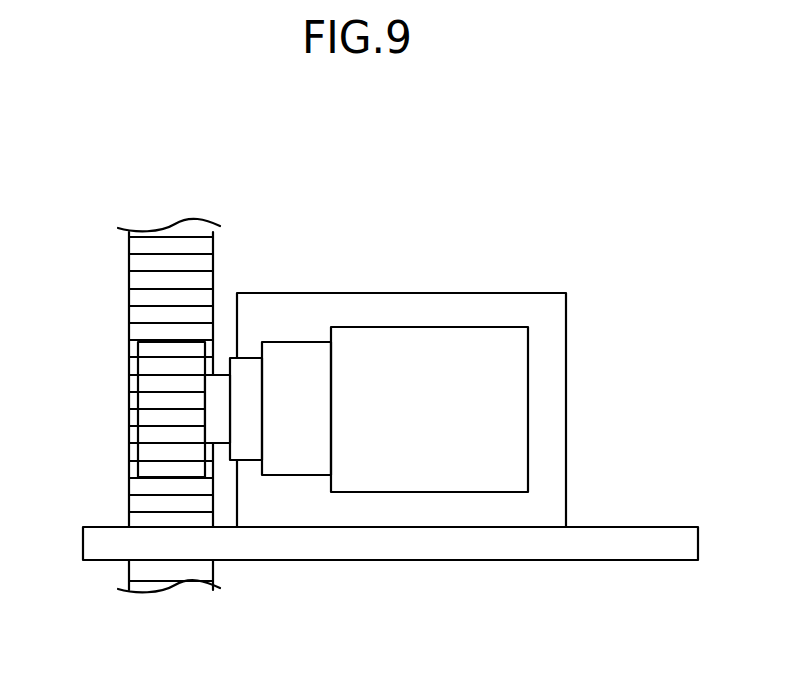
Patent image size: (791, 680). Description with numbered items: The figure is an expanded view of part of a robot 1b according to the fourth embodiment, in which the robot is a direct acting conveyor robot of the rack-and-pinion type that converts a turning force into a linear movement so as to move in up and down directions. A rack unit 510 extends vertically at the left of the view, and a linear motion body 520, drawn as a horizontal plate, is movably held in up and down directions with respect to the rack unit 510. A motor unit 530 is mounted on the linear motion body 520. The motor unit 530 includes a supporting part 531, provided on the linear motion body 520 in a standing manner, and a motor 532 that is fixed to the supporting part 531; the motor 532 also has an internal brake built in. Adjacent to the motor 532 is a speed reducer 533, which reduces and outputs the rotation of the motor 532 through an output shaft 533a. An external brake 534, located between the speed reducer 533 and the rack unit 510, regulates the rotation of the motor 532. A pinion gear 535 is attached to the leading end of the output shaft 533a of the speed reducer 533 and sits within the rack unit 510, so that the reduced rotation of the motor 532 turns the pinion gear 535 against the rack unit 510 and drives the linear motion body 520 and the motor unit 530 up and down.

The robot 1b is at (492, 157).
The rack unit 510 is at (129, 268).
The linear motion body 520 is at (425, 548).
The motor unit 530 is at (563, 240).
The supporting part 531 is at (474, 293).
The motor 532 is at (376, 326).
The speed reducer 533 is at (310, 462).
The output shaft 533a is at (222, 430).
The external brake 534 is at (240, 356).
The pinion gear 535 is at (145, 386).